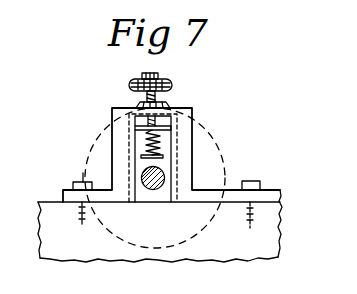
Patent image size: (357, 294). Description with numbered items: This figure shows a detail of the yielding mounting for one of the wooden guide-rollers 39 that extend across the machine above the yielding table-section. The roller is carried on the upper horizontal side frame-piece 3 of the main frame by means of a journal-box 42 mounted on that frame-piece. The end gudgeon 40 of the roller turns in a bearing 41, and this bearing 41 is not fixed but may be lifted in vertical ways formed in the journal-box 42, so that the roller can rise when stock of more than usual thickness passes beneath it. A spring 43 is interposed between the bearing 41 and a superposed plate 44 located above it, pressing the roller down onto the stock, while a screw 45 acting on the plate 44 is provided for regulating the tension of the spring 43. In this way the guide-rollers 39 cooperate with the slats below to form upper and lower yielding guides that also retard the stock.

The upper horizontal member 3 is at (278, 222).
The guide-roller 39 is at (218, 142).
The gudgeon 40 is at (142, 175).
The bearing 41 is at (165, 164).
The journal-box 42 is at (110, 108).
The spring 43 is at (146, 139).
The superposed plate 44 is at (171, 123).
The screw 45 is at (157, 92).